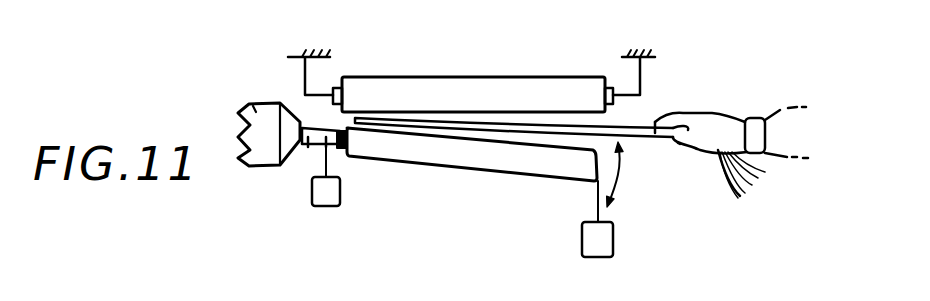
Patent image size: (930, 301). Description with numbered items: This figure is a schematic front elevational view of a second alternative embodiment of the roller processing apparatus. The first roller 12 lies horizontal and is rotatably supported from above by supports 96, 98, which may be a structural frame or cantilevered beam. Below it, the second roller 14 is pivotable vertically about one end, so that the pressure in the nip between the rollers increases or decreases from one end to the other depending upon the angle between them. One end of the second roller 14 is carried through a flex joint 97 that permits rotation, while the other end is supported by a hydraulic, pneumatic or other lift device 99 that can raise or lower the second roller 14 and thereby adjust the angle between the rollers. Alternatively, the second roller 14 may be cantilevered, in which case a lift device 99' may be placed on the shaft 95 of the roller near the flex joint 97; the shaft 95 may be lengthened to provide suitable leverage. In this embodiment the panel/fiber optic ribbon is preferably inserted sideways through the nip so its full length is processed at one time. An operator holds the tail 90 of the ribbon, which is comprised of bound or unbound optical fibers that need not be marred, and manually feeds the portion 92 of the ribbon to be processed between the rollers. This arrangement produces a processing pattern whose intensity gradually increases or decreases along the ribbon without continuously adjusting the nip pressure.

The first roller 12 is at (422, 85).
The second roller 14 is at (467, 163).
The tail 90 is at (760, 188).
The portion of the panel/fiber optic ribbon to be processed 92 is at (507, 121).
The shaft 95 is at (308, 150).
The support 96 is at (297, 57).
The flex joint 97 is at (254, 108).
The support 98 is at (653, 56).
The lift device 99 is at (629, 199).
The lift device 99' is at (320, 201).